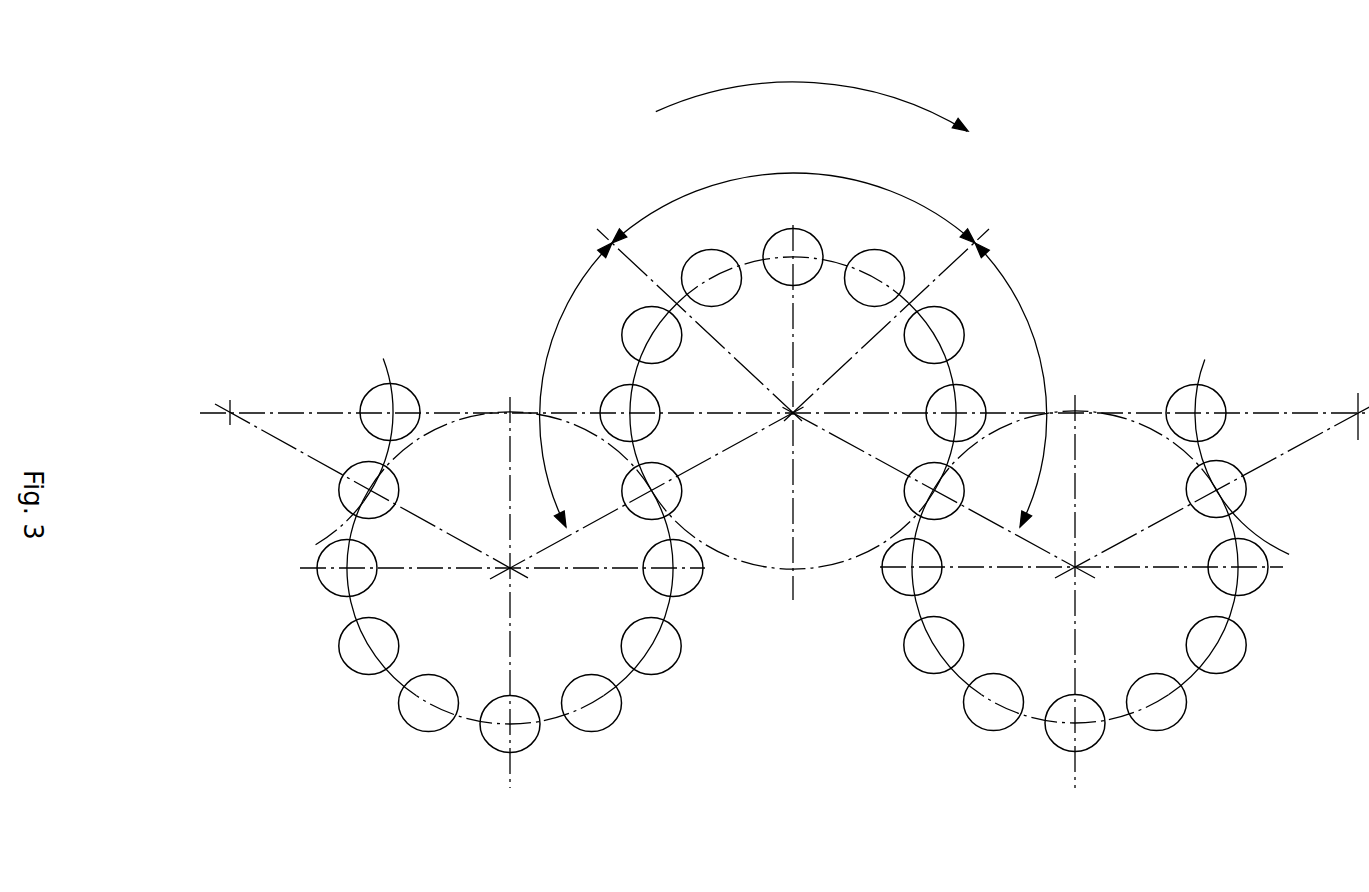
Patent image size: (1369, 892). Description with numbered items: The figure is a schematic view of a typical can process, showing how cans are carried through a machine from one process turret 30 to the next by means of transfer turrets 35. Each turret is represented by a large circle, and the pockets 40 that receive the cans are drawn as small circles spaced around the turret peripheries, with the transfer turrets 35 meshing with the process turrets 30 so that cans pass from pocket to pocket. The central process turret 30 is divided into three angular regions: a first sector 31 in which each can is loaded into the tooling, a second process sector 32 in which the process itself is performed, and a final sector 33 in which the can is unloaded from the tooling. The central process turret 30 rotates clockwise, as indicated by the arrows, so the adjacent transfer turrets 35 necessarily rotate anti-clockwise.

The process turret 30 is at (784, 412).
The transfer turret 35 is at (791, 591).
The pocket 40 is at (792, 491).
The first sector 31 is at (647, 350).
The second process sector 32 is at (812, 106).
The final sector 33 is at (939, 350).